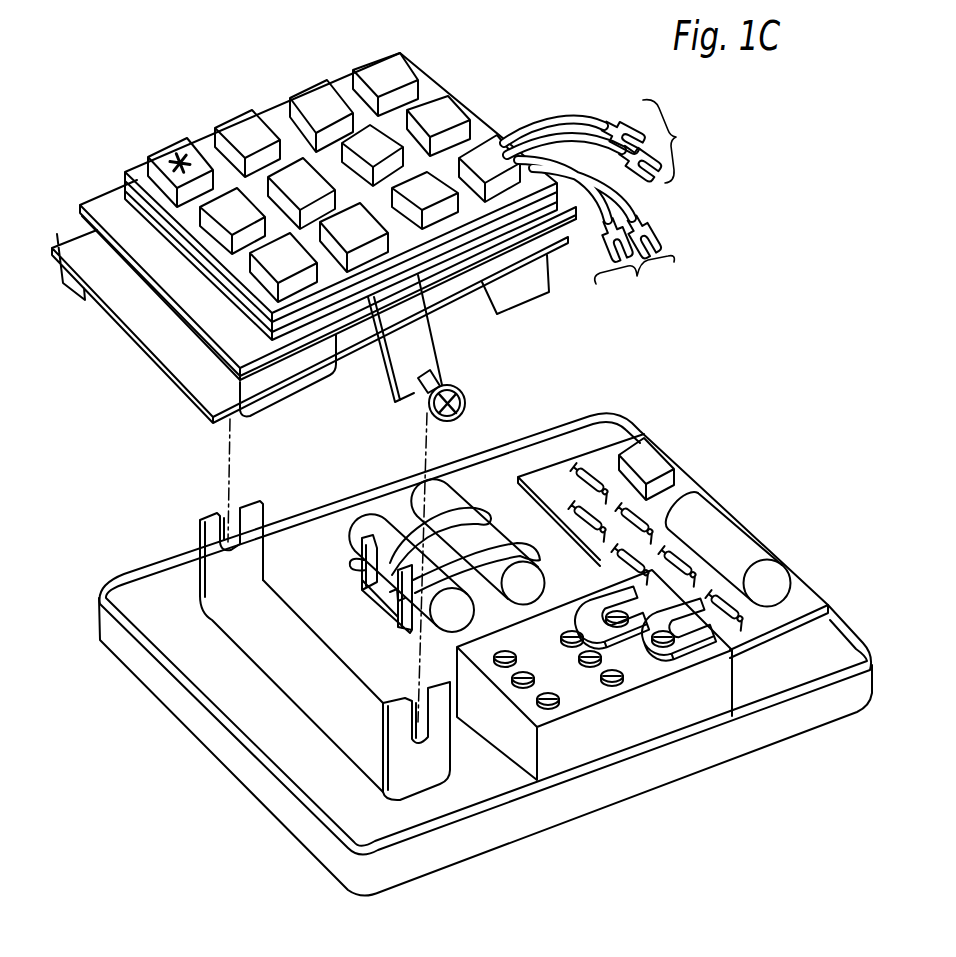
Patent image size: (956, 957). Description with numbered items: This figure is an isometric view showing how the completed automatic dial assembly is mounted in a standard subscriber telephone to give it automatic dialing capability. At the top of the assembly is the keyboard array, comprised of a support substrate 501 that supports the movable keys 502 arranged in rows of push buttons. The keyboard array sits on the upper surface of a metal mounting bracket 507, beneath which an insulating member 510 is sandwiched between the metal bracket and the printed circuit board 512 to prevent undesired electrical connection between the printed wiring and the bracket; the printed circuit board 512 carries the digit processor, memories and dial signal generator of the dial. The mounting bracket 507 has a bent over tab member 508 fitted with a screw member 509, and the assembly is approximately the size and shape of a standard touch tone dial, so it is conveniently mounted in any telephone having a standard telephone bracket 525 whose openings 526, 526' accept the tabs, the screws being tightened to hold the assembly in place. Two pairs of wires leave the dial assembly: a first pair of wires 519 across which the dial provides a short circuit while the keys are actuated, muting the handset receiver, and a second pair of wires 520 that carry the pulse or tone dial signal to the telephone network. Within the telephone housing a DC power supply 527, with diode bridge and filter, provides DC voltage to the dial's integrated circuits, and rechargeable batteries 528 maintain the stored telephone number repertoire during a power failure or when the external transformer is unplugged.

The support substrate 501 is at (443, 84).
The movable keys 502 is at (357, 72).
The metal mounting bracket 507 is at (107, 190).
The bent over tab member 508 is at (427, 338).
The screw member 509 is at (467, 403).
The insulating member 510 is at (78, 215).
The printed circuit board 512 is at (143, 343).
The first pair of wires 519 is at (612, 141).
The second pair of wires 520 is at (596, 238).
The standard telephone bracket 525 is at (266, 508).
The opening 526 is at (206, 536).
The opening 526' is at (399, 724).
The DC power supply 527 is at (605, 462).
The rechargeable batteries 528 is at (444, 490).